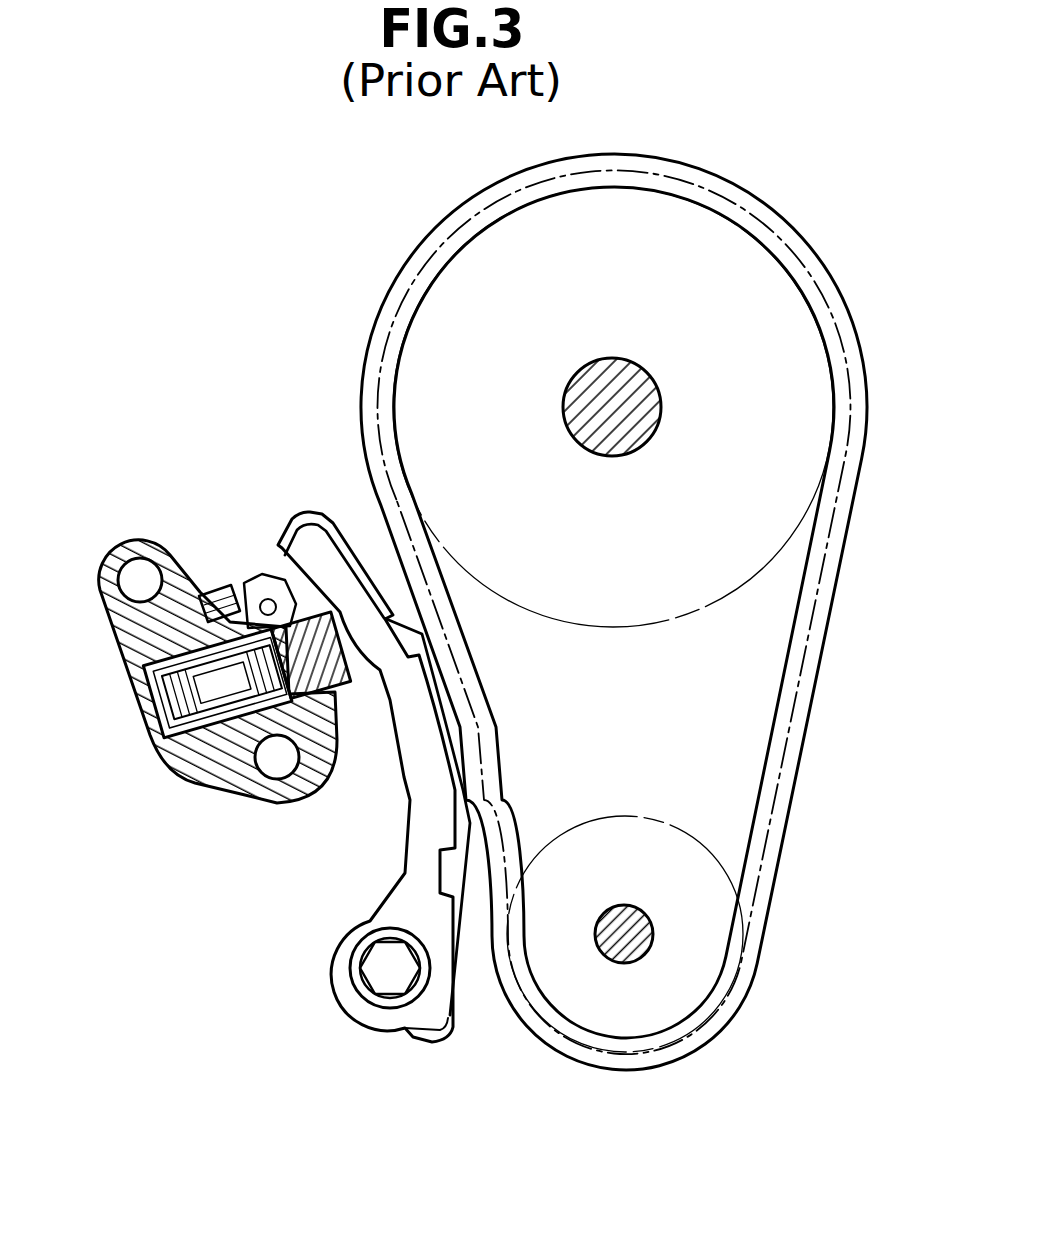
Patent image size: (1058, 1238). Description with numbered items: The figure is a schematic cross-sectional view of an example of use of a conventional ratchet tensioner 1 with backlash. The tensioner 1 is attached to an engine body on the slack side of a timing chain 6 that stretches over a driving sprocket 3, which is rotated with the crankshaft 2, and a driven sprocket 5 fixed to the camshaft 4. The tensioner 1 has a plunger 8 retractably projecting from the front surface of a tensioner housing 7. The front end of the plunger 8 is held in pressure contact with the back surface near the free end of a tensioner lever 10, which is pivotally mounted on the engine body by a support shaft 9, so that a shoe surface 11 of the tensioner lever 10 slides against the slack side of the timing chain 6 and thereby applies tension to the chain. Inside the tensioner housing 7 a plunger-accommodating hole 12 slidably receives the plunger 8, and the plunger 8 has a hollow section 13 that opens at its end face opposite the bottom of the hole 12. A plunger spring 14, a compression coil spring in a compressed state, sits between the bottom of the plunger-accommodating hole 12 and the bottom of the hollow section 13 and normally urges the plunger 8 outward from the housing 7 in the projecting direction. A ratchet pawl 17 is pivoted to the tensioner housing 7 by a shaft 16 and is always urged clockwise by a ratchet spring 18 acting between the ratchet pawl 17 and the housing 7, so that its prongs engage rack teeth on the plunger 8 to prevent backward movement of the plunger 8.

The ratchet tensioner 1 is at (212, 667).
The crankshaft 2 is at (636, 945).
The driving sprocket 3 is at (710, 935).
The camshaft 4 is at (650, 397).
The driven sprocket 5 is at (812, 388).
The timing chain 6 is at (852, 470).
The tensioner housing 7 is at (195, 763).
The plunger 8 is at (330, 690).
The support shaft 9 is at (380, 977).
The tensioner lever 10 is at (443, 772).
The shoe surface 11 is at (455, 708).
The plunger-accommodating hole 12 is at (218, 700).
The hollow section 13 is at (222, 718).
The plunger spring 14 is at (148, 682).
The shaft 16 is at (270, 599).
The ratchet pawl 17 is at (252, 580).
The ratchet spring 18 is at (205, 608).